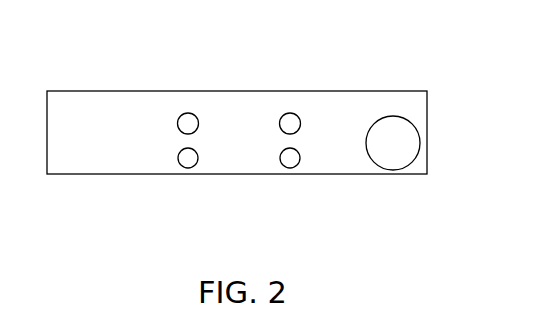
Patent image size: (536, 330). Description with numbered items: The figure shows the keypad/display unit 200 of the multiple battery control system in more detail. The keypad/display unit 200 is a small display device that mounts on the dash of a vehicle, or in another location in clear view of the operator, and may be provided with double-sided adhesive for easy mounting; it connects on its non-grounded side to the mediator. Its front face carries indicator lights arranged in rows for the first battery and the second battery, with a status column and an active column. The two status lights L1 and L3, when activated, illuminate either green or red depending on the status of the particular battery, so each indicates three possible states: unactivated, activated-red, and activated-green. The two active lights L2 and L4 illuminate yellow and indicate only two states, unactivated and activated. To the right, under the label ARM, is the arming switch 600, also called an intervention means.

The keypad/display unit 200 is at (255, 65).
The status light L1 is at (187, 122).
The active light L2 is at (289, 123).
The status light L3 is at (190, 159).
The active light L4 is at (292, 159).
The arming switch 600 is at (403, 142).